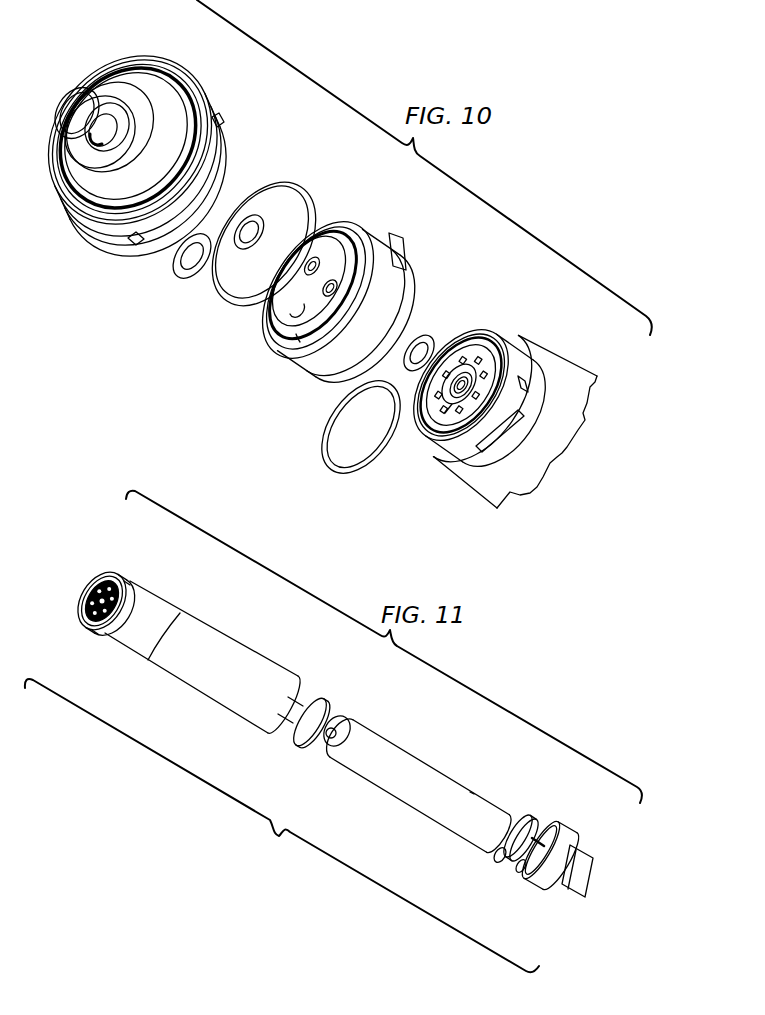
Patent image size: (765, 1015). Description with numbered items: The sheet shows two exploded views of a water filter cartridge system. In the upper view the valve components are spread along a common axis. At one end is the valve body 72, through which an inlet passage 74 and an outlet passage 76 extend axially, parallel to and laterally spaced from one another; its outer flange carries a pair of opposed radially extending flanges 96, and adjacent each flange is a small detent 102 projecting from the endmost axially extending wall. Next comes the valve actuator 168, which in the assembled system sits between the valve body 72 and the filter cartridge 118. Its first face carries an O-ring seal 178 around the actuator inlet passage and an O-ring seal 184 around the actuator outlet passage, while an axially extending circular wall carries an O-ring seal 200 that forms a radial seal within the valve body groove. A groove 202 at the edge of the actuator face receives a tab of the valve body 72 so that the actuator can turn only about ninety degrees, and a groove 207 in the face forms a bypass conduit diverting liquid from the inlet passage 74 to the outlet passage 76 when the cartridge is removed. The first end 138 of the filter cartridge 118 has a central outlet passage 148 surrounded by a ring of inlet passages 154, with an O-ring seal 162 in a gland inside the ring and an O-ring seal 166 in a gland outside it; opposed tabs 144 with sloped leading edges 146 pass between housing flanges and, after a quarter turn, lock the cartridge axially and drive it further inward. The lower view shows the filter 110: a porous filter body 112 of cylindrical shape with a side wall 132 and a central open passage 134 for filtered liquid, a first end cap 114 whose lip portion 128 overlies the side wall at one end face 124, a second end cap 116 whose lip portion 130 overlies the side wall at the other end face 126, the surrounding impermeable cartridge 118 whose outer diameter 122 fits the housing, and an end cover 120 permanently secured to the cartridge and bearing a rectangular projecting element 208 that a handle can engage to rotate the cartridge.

In FIG. 10, the valve body 72 is at (213, 83).
In FIG. 10, the inlet passage 74 is at (72, 106).
In FIG. 10, the outlet passage 76 is at (96, 112).
In FIG. 10, the radially extending flanges 96 is at (234, 146).
In FIG. 10, the detent 102 is at (220, 117).
In FIG. 10, the O-ring seal 184 is at (176, 278).
In FIG. 10, the O-ring seal 178 is at (227, 293).
In FIG. 10, the O-ring seal 200 is at (250, 242).
In FIG. 10, the groove 202 is at (382, 222).
In FIG. 10, the groove 207 is at (273, 323).
In FIG. 10, the valve actuator 168 is at (413, 250).
In FIG. 10, the O-ring seal 166 is at (332, 467).
In FIG. 10, the O-ring seal 162 is at (421, 338).
In FIG. 10, the filter 110 is at (487, 514).
In FIG. 11, the filter 110 is at (350, 725).
In FIG. 10, the filter cartridge 118 is at (470, 483).
In FIG. 11, the filter cartridge 118 is at (227, 668).
In FIG. 10, the first end 138 is at (522, 348).
In FIG. 11, the first end 138 is at (110, 578).
In FIG. 10, the central outlet passage 148 is at (450, 342).
In FIG. 10, the inlet passages 154 is at (445, 413).
In FIG. 10, the leading edges 146 is at (522, 378).
In FIG. 10, the tabs 144 is at (508, 422).
In FIG. 11, the tabs 144 is at (95, 578).
In FIG. 11, the outer diameter 122 is at (172, 640).
In FIG. 11, the first end cap 114 is at (293, 733).
In FIG. 11, the end face 124 is at (320, 747).
In FIG. 11, the open passage 134 is at (332, 727).
In FIG. 11, the filter body 112 is at (395, 755).
In FIG. 11, the lip portion 128 is at (350, 724).
In FIG. 11, the side wall 132 is at (463, 781).
In FIG. 11, the second end cap 116 is at (515, 820).
In FIG. 11, the end face 126 is at (503, 862).
In FIG. 11, the lip portion 130 is at (518, 856).
In FIG. 11, the end cover 120 is at (560, 840).
In FIG. 11, the projecting element 208 is at (576, 876).